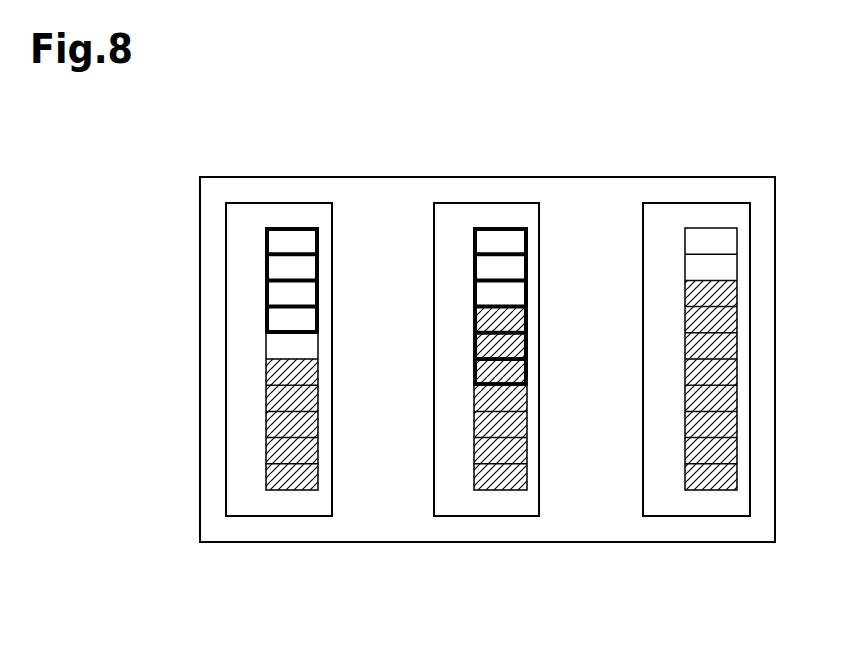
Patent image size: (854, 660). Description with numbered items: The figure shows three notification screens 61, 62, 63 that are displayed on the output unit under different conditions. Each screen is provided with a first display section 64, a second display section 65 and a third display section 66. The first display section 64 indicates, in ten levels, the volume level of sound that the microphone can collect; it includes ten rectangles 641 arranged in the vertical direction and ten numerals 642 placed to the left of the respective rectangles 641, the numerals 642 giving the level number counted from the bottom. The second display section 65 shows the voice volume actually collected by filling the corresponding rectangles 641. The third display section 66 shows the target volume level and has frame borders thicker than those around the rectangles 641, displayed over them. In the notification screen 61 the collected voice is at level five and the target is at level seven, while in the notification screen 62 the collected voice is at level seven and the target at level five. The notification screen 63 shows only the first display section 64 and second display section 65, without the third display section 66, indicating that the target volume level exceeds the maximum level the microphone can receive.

The notification screen 61 is at (283, 203).
The notification screen 62 is at (497, 203).
The notification screen 63 is at (690, 203).
The first display section 64 is at (407, 432).
The rectangles 641 is at (272, 491).
The numerals 642 is at (232, 430).
The second display section 65 is at (304, 487).
The third display section 66 is at (320, 238).